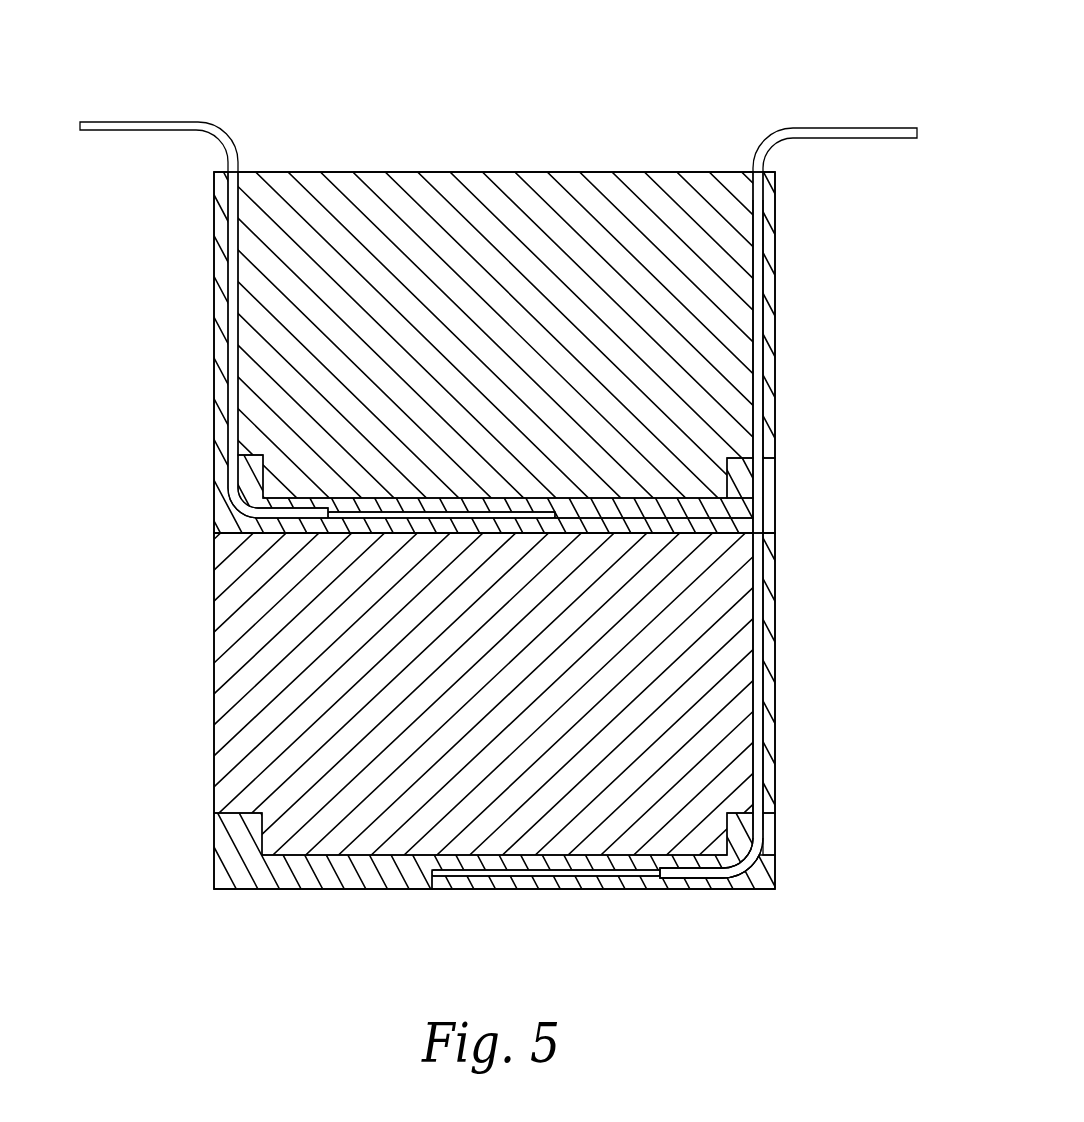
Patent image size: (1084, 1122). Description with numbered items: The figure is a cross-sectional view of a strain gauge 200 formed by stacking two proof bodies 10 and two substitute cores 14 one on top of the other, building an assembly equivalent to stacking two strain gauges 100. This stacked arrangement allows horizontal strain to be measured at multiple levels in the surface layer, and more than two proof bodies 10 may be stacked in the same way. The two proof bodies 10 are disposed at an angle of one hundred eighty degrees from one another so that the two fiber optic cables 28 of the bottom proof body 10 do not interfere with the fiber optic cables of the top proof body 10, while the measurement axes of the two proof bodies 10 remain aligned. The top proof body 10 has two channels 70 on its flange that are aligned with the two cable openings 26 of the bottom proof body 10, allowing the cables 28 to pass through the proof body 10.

The strain gauge 200 is at (438, 172).
The strain gauge 100 is at (777, 377).
The substitute core 14 is at (512, 333).
The proof body 10 is at (775, 308).
The fiber optic cable 28 is at (156, 122).
The channel 70 is at (775, 493).
The cable opening 26 is at (772, 815).